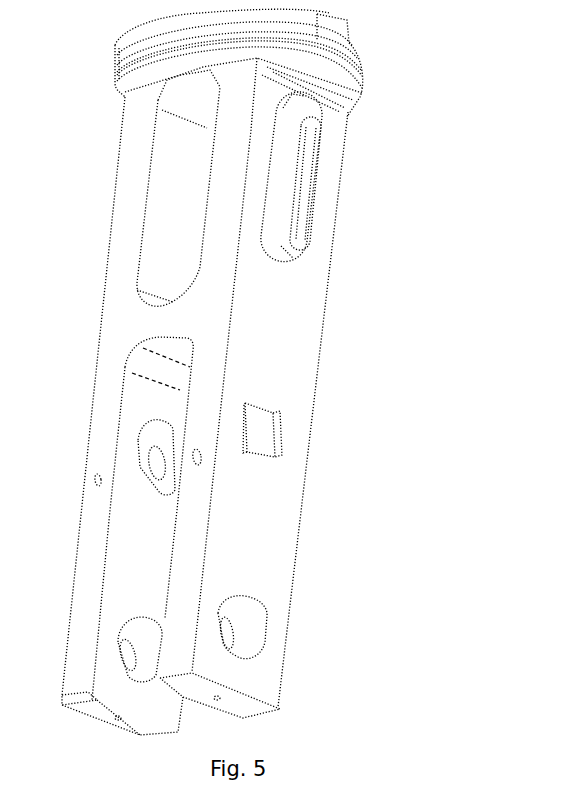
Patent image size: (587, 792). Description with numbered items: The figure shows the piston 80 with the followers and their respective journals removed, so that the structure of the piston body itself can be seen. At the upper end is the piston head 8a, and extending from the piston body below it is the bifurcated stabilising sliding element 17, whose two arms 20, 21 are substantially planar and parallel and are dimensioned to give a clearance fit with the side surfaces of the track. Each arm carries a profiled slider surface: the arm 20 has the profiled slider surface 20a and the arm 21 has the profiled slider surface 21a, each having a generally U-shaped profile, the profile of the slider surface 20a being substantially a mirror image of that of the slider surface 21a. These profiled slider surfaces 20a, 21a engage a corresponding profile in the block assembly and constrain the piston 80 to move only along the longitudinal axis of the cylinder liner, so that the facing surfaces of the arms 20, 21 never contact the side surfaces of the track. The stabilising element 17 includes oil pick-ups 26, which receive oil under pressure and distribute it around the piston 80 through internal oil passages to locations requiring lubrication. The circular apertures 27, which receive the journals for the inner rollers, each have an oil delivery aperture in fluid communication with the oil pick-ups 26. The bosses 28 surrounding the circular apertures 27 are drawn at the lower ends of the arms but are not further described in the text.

The piston head 8a is at (333, 60).
The piston 80 is at (282, 308).
The oil pick-ups 26 is at (197, 458).
The bifurcated stabilising sliding element 17 is at (288, 478).
The profiled slider surface 20a is at (193, 542).
The arm 20 is at (280, 563).
The boss 28 is at (230, 597).
The circular apertures 27 is at (243, 647).
The profiled slider surface 21a is at (93, 542).
The arm 21 is at (93, 598).